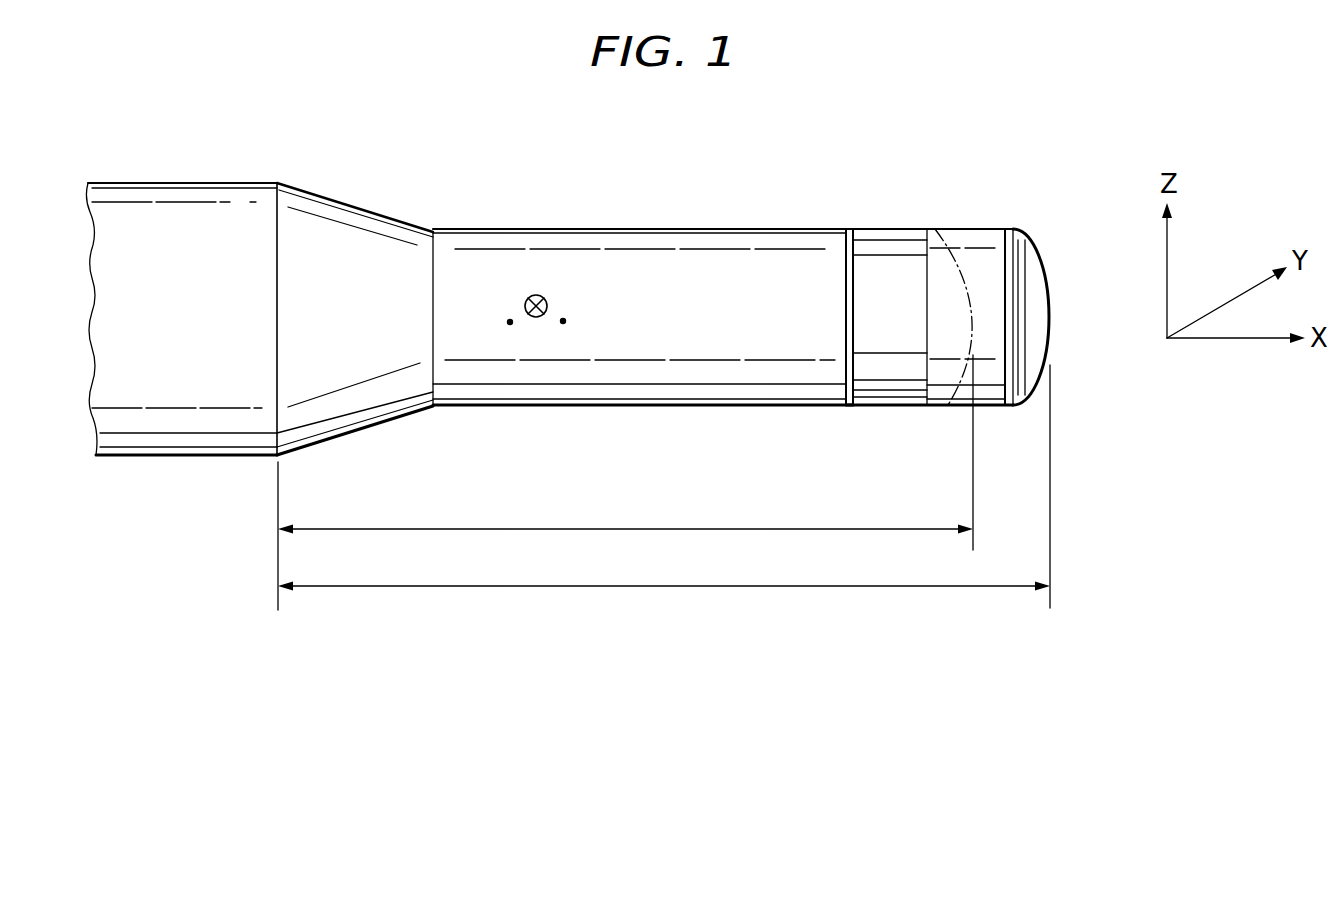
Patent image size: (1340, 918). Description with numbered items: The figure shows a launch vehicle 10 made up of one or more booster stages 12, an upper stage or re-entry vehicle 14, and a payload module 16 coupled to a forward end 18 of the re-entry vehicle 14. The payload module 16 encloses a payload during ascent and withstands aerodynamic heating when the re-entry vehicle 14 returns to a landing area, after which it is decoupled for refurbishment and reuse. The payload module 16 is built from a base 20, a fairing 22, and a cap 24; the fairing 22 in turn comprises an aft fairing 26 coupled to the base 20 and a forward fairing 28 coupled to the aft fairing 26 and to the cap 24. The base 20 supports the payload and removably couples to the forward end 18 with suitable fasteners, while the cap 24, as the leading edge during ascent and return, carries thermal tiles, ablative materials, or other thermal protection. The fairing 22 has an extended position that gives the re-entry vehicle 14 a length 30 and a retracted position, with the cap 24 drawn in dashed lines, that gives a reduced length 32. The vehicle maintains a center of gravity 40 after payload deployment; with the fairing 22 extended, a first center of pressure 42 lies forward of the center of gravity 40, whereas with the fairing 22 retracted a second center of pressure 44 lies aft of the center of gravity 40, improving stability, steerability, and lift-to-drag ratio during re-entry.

The launch vehicle 10 is at (328, 64).
The booster stage 12 is at (183, 182).
The re-entry vehicle 14 is at (535, 228).
The payload module 16 is at (1040, 200).
The forward end 18 is at (823, 226).
The base 20 is at (852, 407).
The fairing 22 is at (941, 430).
The cap 24 is at (1052, 317).
The aft fairing 26 is at (892, 230).
The forward fairing 28 is at (963, 228).
The length 30 is at (667, 587).
The reduced length 32 is at (625, 528).
The center of gravity 40 is at (548, 306).
The first center of pressure 42 is at (563, 321).
The second center of pressure 44 is at (510, 322).